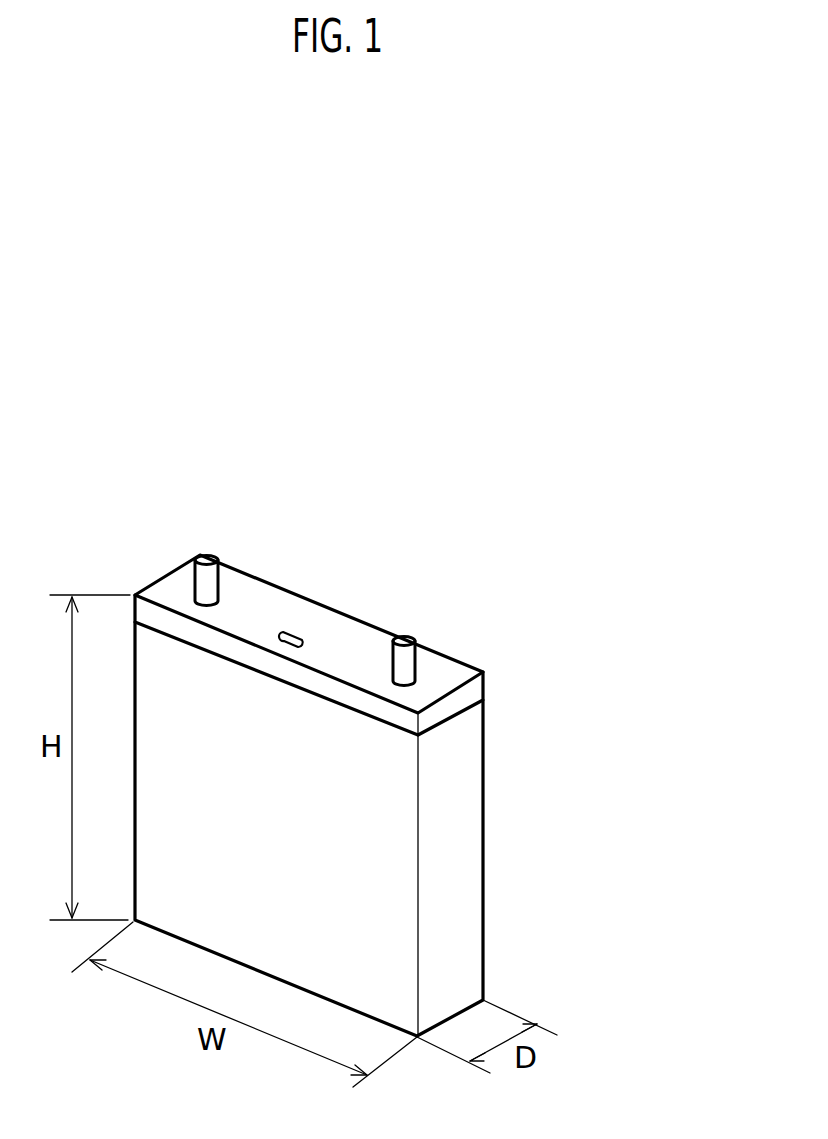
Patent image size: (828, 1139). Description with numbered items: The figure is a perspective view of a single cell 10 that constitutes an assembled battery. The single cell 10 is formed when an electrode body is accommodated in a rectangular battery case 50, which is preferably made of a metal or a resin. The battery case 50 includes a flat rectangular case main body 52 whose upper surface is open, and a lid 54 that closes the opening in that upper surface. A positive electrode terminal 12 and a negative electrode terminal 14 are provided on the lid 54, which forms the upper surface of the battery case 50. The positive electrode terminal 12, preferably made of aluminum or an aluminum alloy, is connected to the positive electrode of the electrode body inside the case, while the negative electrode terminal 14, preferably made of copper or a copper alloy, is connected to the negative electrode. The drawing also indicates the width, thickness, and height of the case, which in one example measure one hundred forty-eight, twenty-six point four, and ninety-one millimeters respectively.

The single cell 10 is at (640, 505).
The positive electrode terminal 12 is at (404, 640).
The negative electrode terminal 14 is at (207, 557).
The battery case 50 is at (455, 850).
The case main body 52 is at (473, 957).
The lid 54 is at (483, 692).